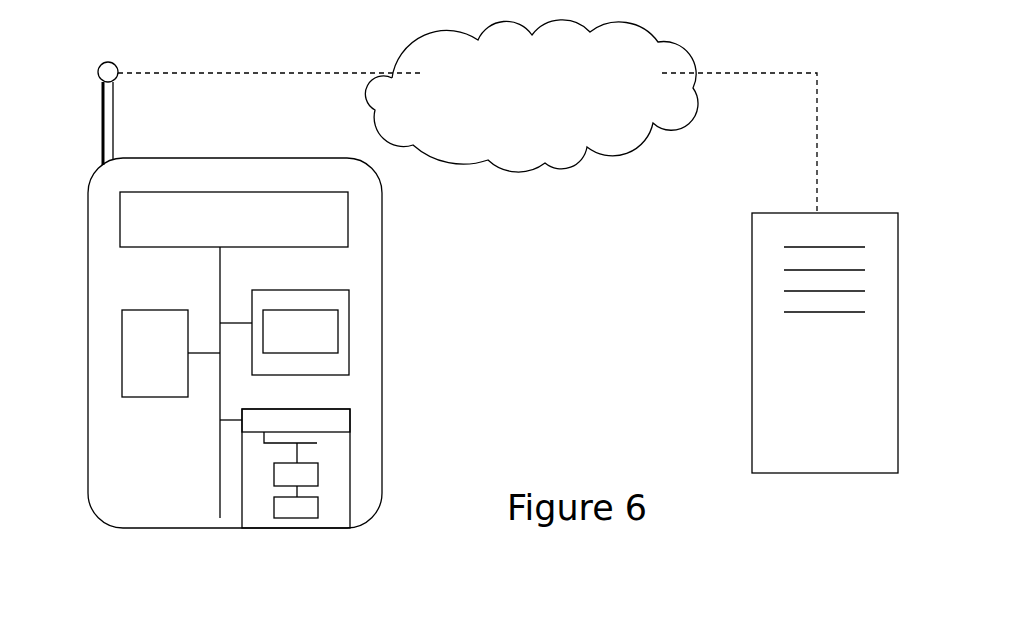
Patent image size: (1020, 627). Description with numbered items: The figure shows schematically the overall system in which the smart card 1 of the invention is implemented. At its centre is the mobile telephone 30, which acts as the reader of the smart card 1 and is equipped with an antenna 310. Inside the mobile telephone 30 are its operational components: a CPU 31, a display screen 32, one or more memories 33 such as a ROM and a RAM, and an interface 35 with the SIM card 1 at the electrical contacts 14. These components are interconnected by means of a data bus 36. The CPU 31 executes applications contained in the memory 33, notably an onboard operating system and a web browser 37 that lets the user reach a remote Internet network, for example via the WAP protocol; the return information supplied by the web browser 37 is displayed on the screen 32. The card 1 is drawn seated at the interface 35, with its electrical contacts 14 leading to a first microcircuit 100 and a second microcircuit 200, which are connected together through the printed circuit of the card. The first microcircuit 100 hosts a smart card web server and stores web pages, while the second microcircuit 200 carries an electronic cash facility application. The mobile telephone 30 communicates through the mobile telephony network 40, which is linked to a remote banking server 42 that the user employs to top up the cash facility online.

The smart card 1 is at (255, 520).
The electrical contacts 14 is at (320, 436).
The mobile telephone 30 is at (95, 503).
The CPU 31 is at (122, 352).
The display screen 32 is at (337, 213).
The memory 33 is at (340, 299).
The interface 35 is at (350, 422).
The data bus 36 is at (220, 298).
The web browser 37 is at (338, 332).
The mobile telephony network 40 is at (547, 152).
The remote banking server 42 is at (853, 460).
The first microcircuit 100 is at (313, 477).
The second microcircuit 200 is at (297, 518).
The antenna 310 is at (108, 117).